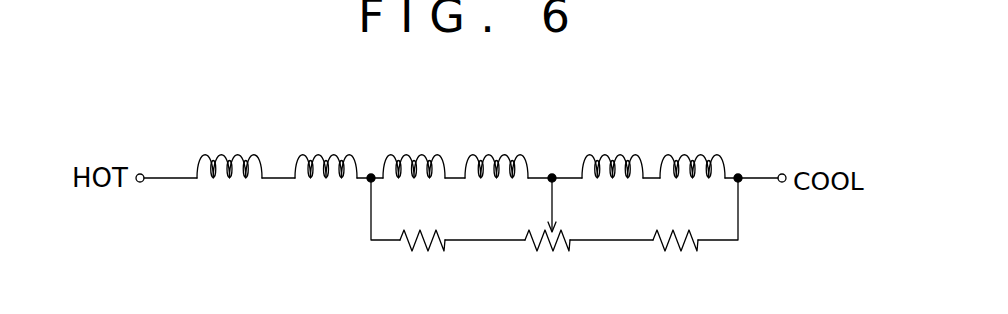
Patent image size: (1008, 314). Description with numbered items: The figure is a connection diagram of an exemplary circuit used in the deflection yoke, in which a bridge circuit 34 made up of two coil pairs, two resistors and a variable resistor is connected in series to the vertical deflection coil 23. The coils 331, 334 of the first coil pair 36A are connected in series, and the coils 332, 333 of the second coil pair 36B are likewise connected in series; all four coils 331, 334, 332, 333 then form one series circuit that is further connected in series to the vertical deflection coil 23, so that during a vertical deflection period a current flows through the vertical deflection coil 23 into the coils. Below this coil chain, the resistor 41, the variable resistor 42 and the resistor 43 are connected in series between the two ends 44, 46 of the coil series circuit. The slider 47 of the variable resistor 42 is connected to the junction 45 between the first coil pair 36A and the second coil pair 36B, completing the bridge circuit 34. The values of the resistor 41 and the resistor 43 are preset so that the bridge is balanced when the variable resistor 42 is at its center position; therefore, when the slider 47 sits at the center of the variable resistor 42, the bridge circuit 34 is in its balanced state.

The vertical deflection coil 23 is at (355, 139).
The first coil pair 36A is at (461, 128).
The second coil pair 36B is at (645, 128).
The coil 331 is at (414, 148).
The coil 334 is at (496, 148).
The coil 332 is at (612, 148).
The coil 333 is at (692, 148).
The end 44 is at (369, 181).
The junction 45 is at (552, 176).
The end 46 is at (740, 177).
The slider 47 is at (556, 214).
The resistor 41 is at (422, 259).
The variable resistor 42 is at (547, 260).
The resistor 43 is at (675, 260).
The bridge circuit 34 is at (355, 245).